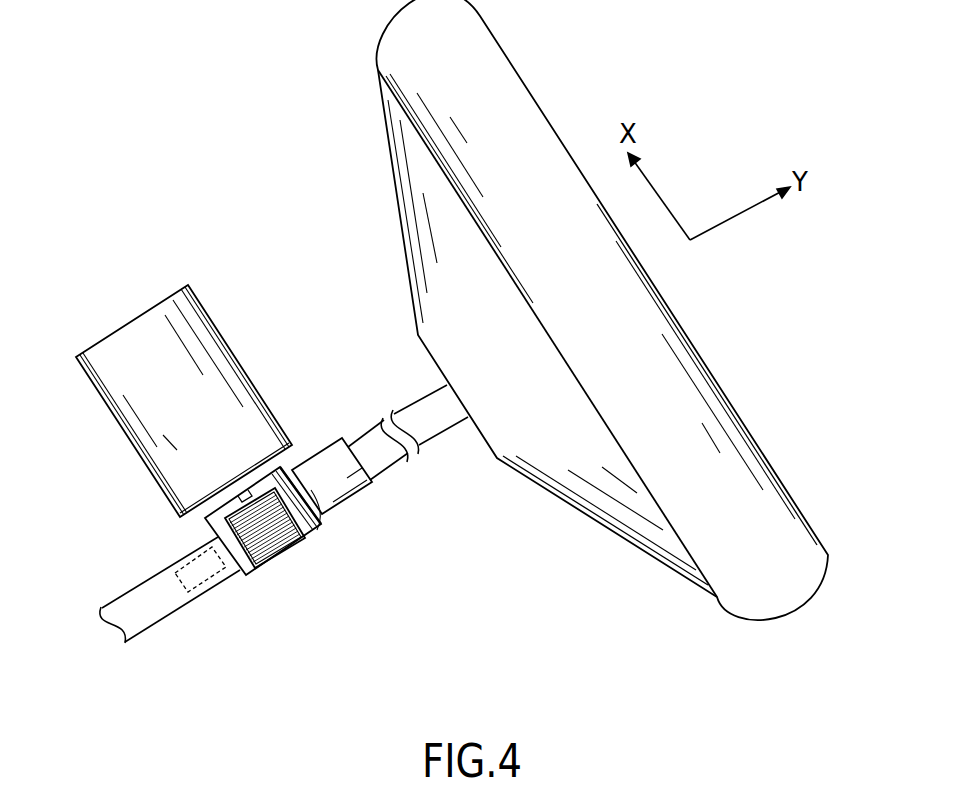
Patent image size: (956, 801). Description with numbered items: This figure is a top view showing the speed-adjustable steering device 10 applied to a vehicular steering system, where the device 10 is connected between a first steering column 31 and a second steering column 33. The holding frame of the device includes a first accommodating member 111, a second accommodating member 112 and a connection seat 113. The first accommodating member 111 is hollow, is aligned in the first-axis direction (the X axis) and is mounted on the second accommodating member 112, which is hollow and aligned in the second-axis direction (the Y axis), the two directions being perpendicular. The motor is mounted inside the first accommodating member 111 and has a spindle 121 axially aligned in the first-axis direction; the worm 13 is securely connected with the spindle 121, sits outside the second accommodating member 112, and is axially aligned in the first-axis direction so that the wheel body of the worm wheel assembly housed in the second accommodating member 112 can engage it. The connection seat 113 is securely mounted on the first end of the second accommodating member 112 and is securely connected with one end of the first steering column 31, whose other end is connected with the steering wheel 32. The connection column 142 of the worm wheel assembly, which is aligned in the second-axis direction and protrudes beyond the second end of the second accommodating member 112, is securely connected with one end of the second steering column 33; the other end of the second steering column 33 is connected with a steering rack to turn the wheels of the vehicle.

The speed-adjustable steering device 10 is at (228, 325).
The first accommodating member 111 is at (138, 337).
The second accommodating member 112 is at (245, 574).
The connection seat 113 is at (345, 487).
The spindle 121 is at (245, 500).
The worm 13 is at (267, 547).
The connection column 142 is at (190, 573).
The first steering column 31 is at (432, 425).
The steering wheel 32 is at (591, 493).
The second steering column 33 is at (148, 612).